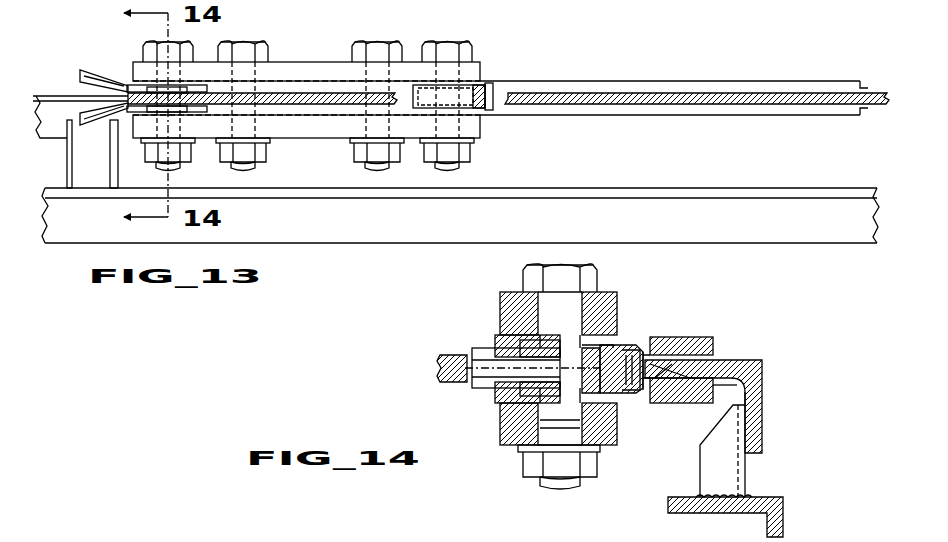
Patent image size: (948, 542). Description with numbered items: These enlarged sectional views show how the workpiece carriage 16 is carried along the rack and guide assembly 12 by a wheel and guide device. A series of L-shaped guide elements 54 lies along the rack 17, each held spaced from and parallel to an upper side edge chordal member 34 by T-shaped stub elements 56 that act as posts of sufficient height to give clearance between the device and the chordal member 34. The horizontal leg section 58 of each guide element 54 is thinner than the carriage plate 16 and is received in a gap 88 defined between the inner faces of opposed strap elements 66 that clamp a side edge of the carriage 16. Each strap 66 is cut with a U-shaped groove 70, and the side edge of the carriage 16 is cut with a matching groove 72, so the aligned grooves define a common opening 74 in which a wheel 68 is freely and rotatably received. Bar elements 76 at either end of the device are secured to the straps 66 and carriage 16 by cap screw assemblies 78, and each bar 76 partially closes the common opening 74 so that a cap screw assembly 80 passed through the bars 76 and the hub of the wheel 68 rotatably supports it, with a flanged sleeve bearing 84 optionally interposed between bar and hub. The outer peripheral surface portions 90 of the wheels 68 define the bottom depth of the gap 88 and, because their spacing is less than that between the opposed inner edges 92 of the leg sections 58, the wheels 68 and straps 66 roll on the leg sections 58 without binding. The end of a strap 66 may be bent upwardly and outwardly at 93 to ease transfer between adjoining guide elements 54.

In FIG. 13, the rack and guide assembly 12 is at (823, 231).
In FIG. 13, the workpiece carriage 16 is at (293, 100).
In FIG. 14, the workpiece carriage 16 is at (453, 358).
In FIG. 13, the rack 17 is at (592, 179).
In FIG. 13, the upper side edge chordal member 34 is at (500, 218).
In FIG. 14, the upper side edge chordal member 34 is at (783, 500).
In FIG. 13, the L-shaped guide element 54 is at (53, 133).
In FIG. 14, the L-shaped guide element 54 is at (762, 368).
In FIG. 13, the T-shaped stub element 56 is at (93, 182).
In FIG. 14, the T-shaped stub element 56 is at (730, 468).
In FIG. 13, the horizontal leg section 58 is at (63, 98).
In FIG. 14, the horizontal leg section 58 is at (755, 362).
In FIG. 13, the strap element 66 is at (563, 97).
In FIG. 14, the strap element 66 is at (503, 335).
In FIG. 13, the wheel 68 is at (200, 82).
In FIG. 14, the wheel 68 is at (627, 375).
In FIG. 14, the groove 70 is at (647, 345).
In FIG. 14, the groove 72 is at (462, 385).
In FIG. 13, the common opening 74 is at (125, 73).
In FIG. 14, the common opening 74 is at (491, 340).
In FIG. 13, the bar element 76 is at (282, 70).
In FIG. 14, the bar element 76 is at (600, 298).
In FIG. 13, the cap screw assembly 78 is at (262, 48).
In FIG. 13, the cap screw assembly 80 is at (448, 52).
In FIG. 14, the cap screw assembly 80 is at (528, 280).
In FIG. 14, the flanged sleeve bearing 84 is at (600, 343).
In FIG. 14, the gap 88 is at (726, 352).
In FIG. 14, the outer peripheral surface portion 90 is at (663, 403).
In FIG. 13, the inner edge 92 is at (90, 100).
In FIG. 14, the inner edge 92 is at (677, 377).
In FIG. 13, the bent strap end 93 is at (96, 118).